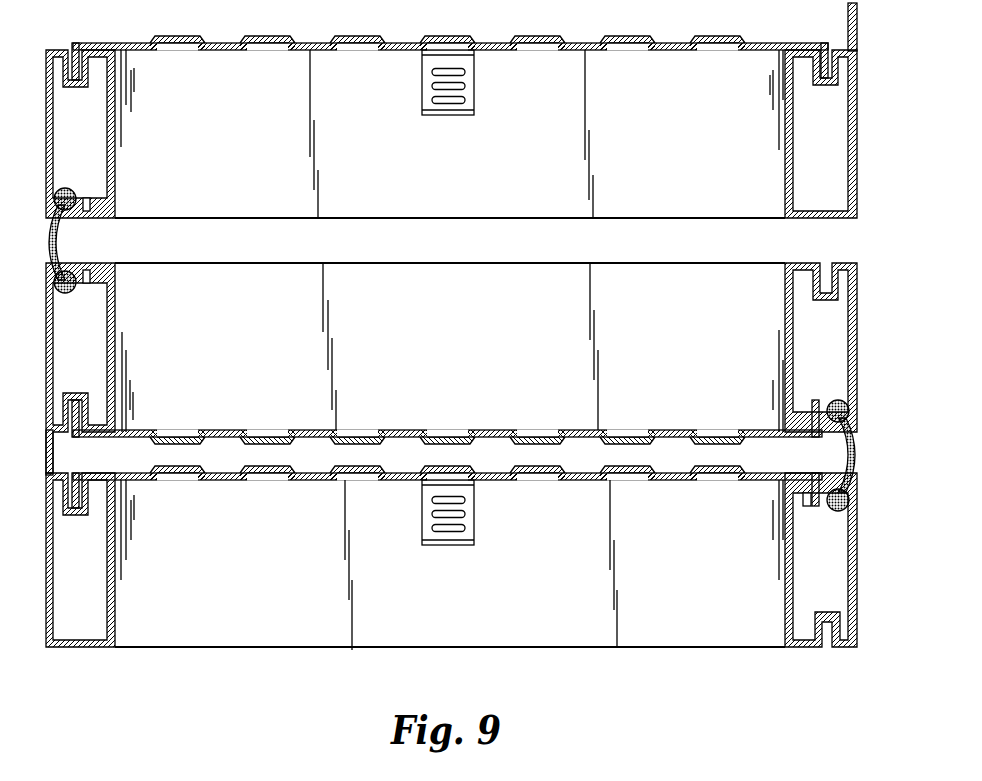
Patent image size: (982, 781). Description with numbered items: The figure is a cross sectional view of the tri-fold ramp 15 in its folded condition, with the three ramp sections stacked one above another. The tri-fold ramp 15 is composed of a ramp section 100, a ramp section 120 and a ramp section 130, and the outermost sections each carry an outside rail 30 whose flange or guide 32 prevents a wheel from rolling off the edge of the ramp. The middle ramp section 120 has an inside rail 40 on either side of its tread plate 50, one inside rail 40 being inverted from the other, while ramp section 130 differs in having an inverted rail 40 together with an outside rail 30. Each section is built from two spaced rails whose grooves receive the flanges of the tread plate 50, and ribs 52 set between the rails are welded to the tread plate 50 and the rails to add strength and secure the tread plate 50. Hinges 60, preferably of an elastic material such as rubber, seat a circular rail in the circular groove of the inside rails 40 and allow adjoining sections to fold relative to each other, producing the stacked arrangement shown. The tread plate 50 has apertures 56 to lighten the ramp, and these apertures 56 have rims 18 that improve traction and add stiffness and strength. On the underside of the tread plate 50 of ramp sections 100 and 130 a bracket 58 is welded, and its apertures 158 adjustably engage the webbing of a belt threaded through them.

The tri-fold ramp 15 is at (578, 690).
The rim 18 is at (213, 42).
The outside rail 30 is at (810, 152).
The flange or guide 32 is at (849, 8).
The inside rail 40 is at (65, 139).
The tread plate 50 is at (228, 52).
The rib 52 is at (220, 159).
The aperture 56 is at (183, 42).
The bracket 58 is at (476, 80).
The hinge 60 is at (52, 247).
The ramp section 100 is at (206, 670).
The ramp section 120 is at (252, 248).
The ramp section 130 is at (476, 233).
The aperture 158 is at (452, 104).